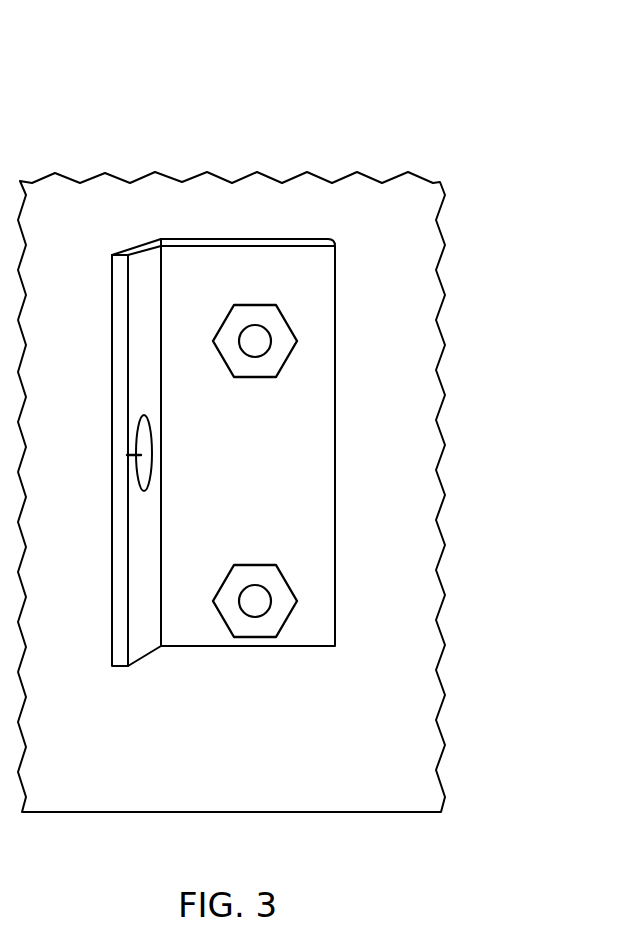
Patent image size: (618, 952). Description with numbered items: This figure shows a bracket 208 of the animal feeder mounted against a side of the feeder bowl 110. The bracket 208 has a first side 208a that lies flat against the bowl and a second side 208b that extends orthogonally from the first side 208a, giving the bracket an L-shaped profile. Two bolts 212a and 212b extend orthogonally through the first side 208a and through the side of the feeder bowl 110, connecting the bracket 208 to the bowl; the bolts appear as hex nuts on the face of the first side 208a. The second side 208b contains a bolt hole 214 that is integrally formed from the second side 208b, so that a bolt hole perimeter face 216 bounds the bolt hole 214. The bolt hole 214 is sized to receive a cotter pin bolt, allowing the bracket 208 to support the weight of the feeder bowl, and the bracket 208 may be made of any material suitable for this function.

The feeder bowl 110 is at (518, 108).
The bracket 208 is at (215, 452).
The first side 208a is at (269, 442).
The second side 208b is at (94, 452).
The bolt 212a is at (255, 305).
The bolt 212b is at (255, 565).
The bolt hole 214 is at (128, 455).
The bolt hole perimeter face 216 is at (152, 448).